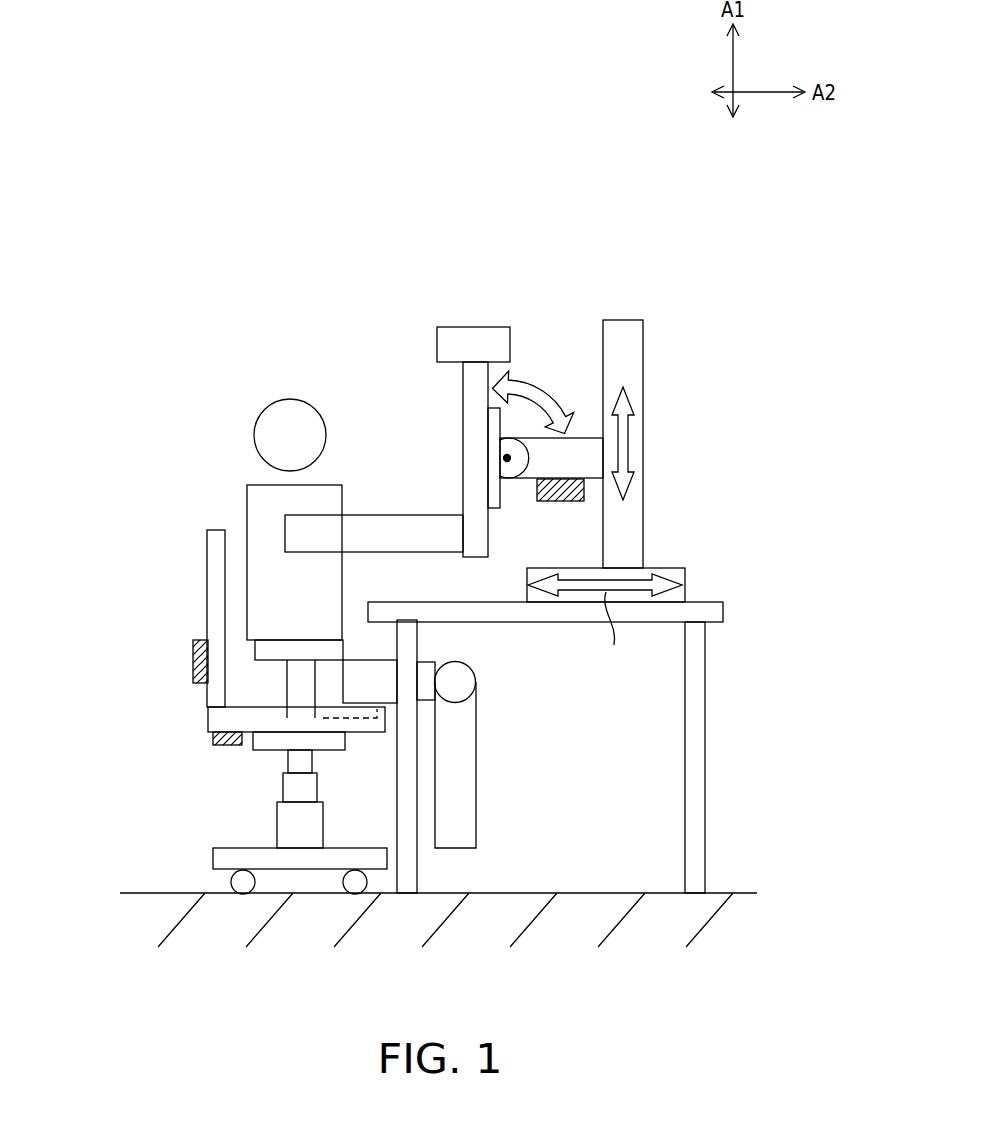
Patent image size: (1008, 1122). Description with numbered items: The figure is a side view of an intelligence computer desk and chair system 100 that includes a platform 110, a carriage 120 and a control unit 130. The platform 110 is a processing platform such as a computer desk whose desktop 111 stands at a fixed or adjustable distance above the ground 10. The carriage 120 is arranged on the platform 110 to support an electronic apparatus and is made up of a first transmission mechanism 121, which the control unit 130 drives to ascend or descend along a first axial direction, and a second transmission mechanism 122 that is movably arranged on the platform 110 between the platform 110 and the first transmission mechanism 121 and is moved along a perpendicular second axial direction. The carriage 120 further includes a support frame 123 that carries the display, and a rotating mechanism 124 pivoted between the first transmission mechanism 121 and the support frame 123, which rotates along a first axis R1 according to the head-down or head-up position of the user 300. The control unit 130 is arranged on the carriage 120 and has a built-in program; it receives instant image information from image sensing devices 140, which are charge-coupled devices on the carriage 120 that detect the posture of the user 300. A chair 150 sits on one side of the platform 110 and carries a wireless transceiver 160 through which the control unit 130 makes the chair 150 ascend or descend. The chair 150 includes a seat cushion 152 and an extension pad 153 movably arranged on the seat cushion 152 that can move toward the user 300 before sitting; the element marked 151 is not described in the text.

The ground 10 is at (164, 900).
The intelligence computer desk and chair system 100 is at (743, 864).
The platform 110 is at (702, 699).
The desktop 111 is at (714, 600).
The carriage 120 is at (692, 237).
The first transmission mechanism 121 is at (625, 340).
The second transmission mechanism 122 is at (669, 568).
The support frame 123 is at (490, 364).
The rotating mechanism 124 is at (535, 445).
The control unit 130 is at (560, 501).
The image sensing device 140 is at (475, 340).
The chair 150 is at (245, 707).
The chair sensor 151 is at (217, 740).
The seat cushion 152 is at (215, 718).
The extension pad 153 is at (373, 722).
The wireless transceiver 160 is at (194, 657).
The user 300 is at (263, 503).
The first axis R1 is at (505, 458).